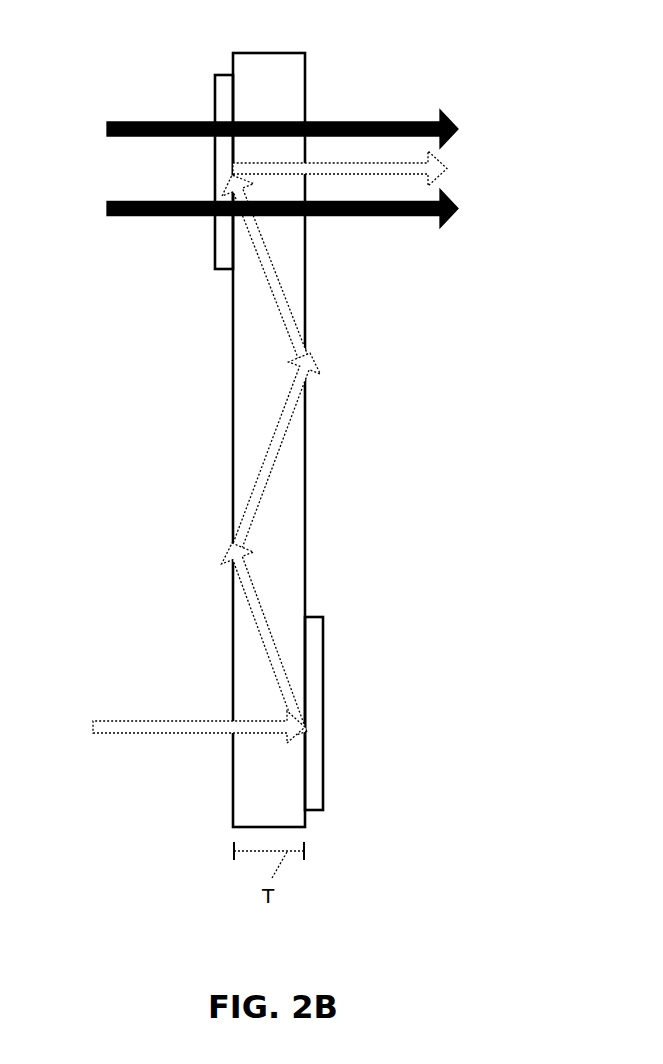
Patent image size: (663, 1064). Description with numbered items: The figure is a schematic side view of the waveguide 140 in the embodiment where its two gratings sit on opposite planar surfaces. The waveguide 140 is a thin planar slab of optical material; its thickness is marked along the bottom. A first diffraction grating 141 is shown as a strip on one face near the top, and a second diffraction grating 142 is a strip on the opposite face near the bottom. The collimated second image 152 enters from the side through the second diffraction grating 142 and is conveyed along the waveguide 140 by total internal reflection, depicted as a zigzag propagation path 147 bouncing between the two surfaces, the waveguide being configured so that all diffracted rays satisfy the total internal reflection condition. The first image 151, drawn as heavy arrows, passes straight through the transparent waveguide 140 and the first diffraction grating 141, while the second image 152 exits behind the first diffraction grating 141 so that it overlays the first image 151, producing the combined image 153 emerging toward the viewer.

The waveguide 140 is at (305, 465).
The first diffraction grating 141 is at (215, 88).
The second diffraction grating 142 is at (313, 720).
The light propagation path 147 is at (277, 528).
The first image 151 is at (133, 137).
The second image 152 is at (162, 735).
The combined image 153 is at (489, 120).